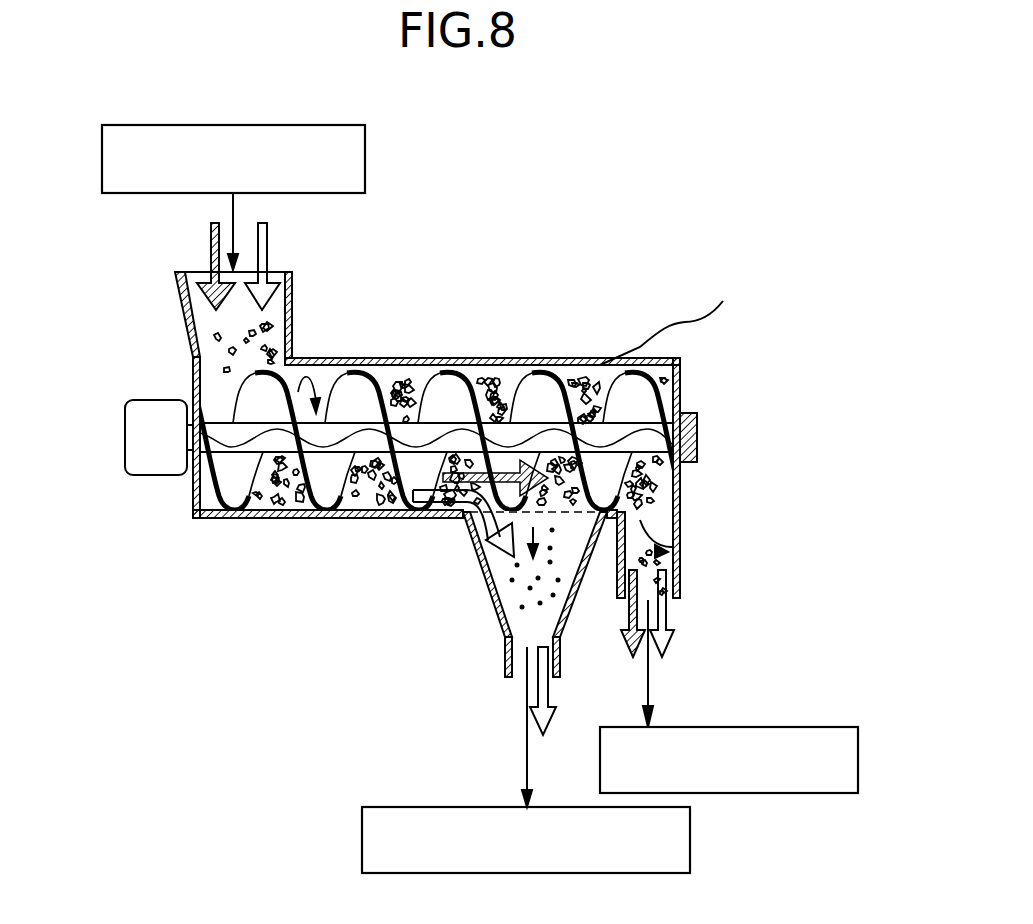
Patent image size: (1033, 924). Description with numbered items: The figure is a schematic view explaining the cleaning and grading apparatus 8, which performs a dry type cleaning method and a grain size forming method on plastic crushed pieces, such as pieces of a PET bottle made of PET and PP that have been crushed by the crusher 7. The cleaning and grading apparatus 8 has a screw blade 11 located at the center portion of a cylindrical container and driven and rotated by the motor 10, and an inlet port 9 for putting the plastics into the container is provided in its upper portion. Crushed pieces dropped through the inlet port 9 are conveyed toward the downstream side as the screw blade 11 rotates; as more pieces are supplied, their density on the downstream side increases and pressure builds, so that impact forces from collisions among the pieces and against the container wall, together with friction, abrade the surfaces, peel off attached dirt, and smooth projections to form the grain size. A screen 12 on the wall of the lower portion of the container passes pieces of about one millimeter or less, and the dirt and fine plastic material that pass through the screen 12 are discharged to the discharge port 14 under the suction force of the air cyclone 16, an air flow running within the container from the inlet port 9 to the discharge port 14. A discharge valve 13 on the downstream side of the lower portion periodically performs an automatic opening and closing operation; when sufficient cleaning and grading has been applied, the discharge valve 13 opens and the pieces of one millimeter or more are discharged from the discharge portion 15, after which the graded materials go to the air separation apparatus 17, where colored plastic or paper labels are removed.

The crusher 7 is at (366, 137).
The cleaning and grading apparatus 8 is at (515, 360).
The inlet port 9 is at (292, 287).
The motor 10 is at (153, 398).
The screw blade 11 is at (368, 380).
The screen 12 is at (563, 515).
The discharge valve 13 is at (670, 503).
The discharge port 14 is at (505, 658).
The discharge portion 15 is at (680, 587).
The air cyclone 16 is at (390, 807).
The air separation apparatus 17 is at (753, 727).